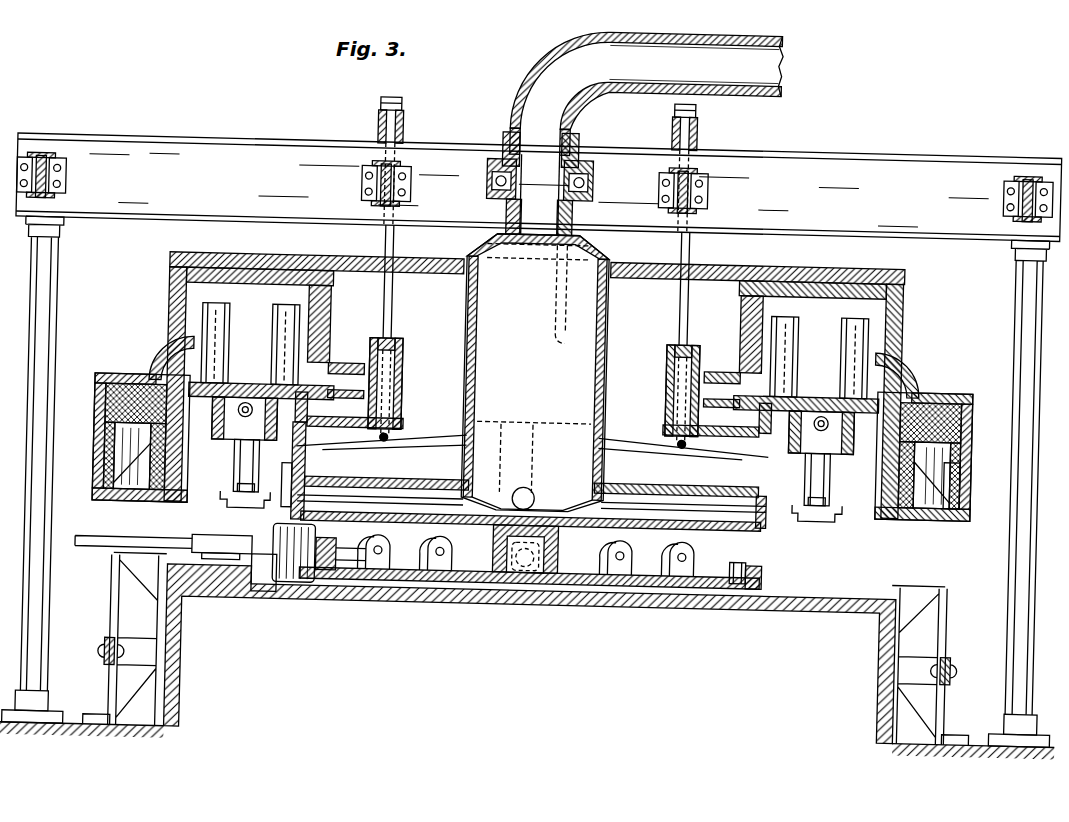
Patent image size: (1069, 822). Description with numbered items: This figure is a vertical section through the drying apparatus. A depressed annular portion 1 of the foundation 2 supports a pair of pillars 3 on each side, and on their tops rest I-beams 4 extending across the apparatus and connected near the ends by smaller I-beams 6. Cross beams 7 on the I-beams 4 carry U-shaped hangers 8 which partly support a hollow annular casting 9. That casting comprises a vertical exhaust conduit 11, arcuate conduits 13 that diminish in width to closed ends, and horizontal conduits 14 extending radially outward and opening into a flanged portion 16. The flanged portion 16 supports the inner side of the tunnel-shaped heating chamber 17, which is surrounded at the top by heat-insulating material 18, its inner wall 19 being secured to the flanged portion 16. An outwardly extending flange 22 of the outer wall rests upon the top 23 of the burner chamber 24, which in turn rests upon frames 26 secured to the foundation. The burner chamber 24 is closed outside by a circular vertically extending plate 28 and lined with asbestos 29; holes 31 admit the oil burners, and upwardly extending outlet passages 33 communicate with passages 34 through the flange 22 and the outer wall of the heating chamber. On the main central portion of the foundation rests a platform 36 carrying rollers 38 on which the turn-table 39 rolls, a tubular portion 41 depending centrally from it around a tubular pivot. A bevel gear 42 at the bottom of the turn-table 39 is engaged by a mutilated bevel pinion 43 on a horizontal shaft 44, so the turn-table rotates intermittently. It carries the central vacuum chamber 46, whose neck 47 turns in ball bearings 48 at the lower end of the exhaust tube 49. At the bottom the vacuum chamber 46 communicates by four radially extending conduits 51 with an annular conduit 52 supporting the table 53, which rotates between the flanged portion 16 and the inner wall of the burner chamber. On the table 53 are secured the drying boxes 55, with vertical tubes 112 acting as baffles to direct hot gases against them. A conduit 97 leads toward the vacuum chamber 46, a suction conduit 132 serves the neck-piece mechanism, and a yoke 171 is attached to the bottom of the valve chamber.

The depressed annular portion 1 is at (928, 724).
The foundation 2 is at (673, 592).
The pillars 3 is at (61, 634).
The I-beams 4 is at (539, 187).
The smaller I-beams 6 is at (48, 197).
The cross beams 7 is at (403, 118).
The U-shaped hangers 8 is at (696, 236).
The hollow annular casting 9 is at (534, 407).
The vertical exhaust conduit 11 is at (567, 294).
The conduits 13 is at (409, 387).
The horizontal conduits 14 is at (533, 413).
The flanged portion 16 is at (326, 382).
The tunnel-shaped heating chamber 17 is at (906, 285).
The heat-insulating material 18 is at (894, 248).
The inner wall 19 is at (742, 340).
The outwardly extending flange 22 is at (140, 371).
The top of burner chamber 23 is at (103, 371).
The burner chamber 24 is at (532, 446).
The frames 26 is at (130, 572).
The circular vertically extending plate 28 is at (979, 404).
The asbestos 29 is at (968, 436).
The holes 31 is at (101, 486).
The outlet passages 33 is at (537, 448).
The passages 34 is at (176, 348).
The platform 36 is at (773, 569).
The rollers 38 is at (773, 556).
The turn-table 39 is at (577, 522).
The tubular portion 41 is at (500, 536).
The bevel gear 42 is at (777, 518).
The mutilated bevel pinion 43 is at (300, 578).
The horizontal shaft 44 is at (100, 546).
The vacuum chamber 46 is at (535, 372).
The neck 47 is at (575, 197).
The ball bearings 48 is at (583, 172).
The exhaust tube 49 is at (590, 84).
The radially extending conduits 51 is at (556, 462).
The annular conduit 52 is at (313, 467).
The table 53 is at (305, 432).
The drying boxes 55 is at (535, 351).
The conduit 97 is at (290, 466).
The vertical tubes 112 is at (262, 336).
The suction conduit 132 is at (240, 454).
The yoke 171 is at (229, 501).